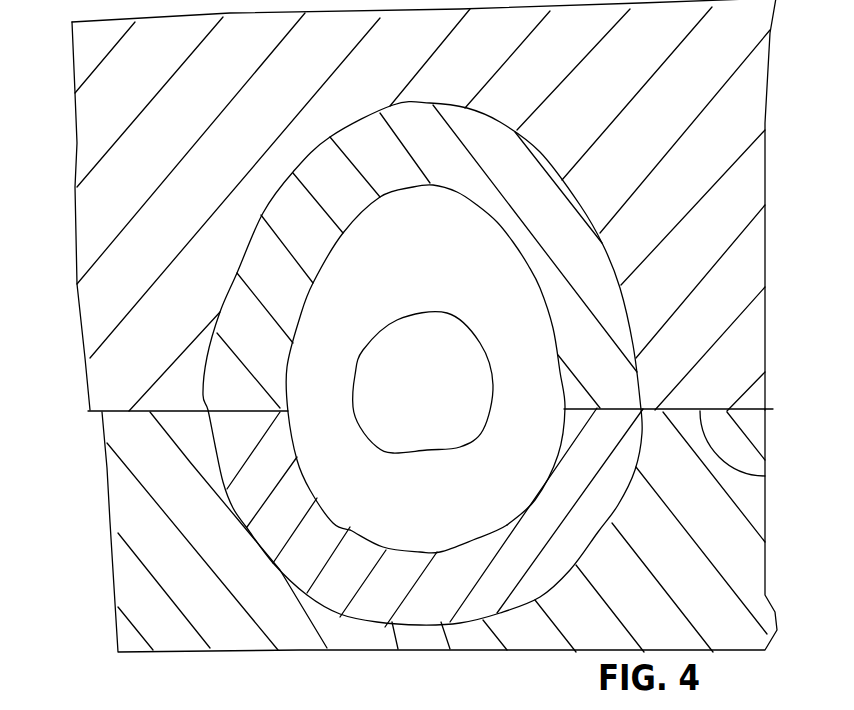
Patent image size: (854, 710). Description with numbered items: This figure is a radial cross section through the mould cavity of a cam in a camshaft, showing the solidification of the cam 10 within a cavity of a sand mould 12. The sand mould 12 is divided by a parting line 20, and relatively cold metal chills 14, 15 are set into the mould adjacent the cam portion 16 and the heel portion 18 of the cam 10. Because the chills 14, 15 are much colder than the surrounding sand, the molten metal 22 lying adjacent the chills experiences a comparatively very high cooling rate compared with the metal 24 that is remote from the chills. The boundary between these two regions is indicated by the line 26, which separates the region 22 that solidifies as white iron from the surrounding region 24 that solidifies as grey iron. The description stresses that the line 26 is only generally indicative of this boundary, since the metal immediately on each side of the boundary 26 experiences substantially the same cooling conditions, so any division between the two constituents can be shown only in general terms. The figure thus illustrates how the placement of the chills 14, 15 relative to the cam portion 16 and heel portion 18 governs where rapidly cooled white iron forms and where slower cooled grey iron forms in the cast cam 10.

The cam 10 is at (343, 548).
The sand mould 12 is at (784, 82).
The metal chill 14 is at (439, 363).
The metal chill 15 is at (604, 523).
The cam portion 16 is at (463, 222).
The heel portion 18 is at (392, 531).
The parting line 20 is at (763, 473).
The molten metal adjacent the chills 22 is at (353, 249).
The metal remote from the chills 24 is at (470, 378).
The boundary line 26 is at (353, 374).